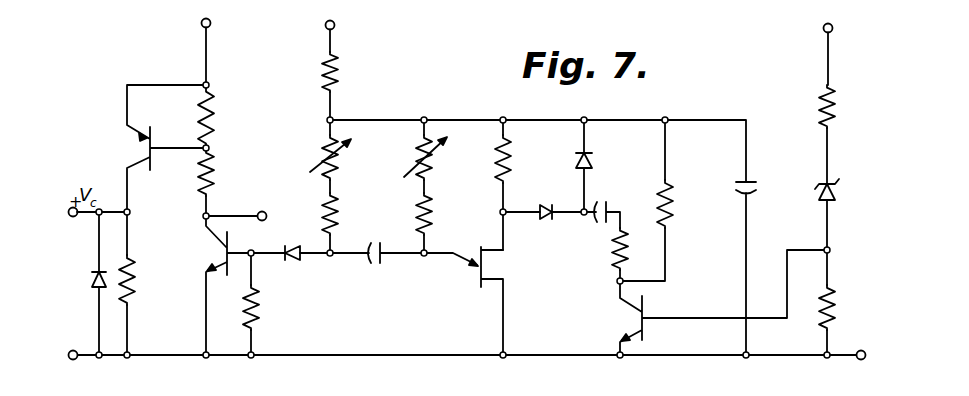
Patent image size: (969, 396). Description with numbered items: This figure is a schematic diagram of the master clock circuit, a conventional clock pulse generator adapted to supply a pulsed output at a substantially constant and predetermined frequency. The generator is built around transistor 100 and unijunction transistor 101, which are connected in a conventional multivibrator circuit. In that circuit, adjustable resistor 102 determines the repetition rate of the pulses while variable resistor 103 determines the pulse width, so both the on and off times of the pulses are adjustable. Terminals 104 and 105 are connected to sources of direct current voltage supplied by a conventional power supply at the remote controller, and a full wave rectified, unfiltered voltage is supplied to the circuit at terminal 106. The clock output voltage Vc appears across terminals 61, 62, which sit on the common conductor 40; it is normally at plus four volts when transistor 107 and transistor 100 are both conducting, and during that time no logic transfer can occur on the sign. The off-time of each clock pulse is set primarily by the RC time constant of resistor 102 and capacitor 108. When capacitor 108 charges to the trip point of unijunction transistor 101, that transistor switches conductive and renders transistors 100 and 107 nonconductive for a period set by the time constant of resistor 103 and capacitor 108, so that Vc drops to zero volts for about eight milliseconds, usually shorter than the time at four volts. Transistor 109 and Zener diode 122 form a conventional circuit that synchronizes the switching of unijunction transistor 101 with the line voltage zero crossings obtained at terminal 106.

The common ground conductor 40 is at (368, 354).
The terminal 61 is at (72, 217).
The terminal 62 is at (72, 360).
The transistor 100 is at (228, 239).
The unijunction transistor 101 is at (478, 278).
The adjustable resistor 102 is at (424, 146).
The variable resistor 103 is at (324, 146).
The terminal 104 is at (210, 26).
The terminal 105 is at (334, 27).
The terminal 106 is at (823, 28).
The transistor 107 is at (168, 122).
The capacitor 108 is at (383, 261).
The transistor 109 is at (645, 299).
The Zener diode 122 is at (830, 196).